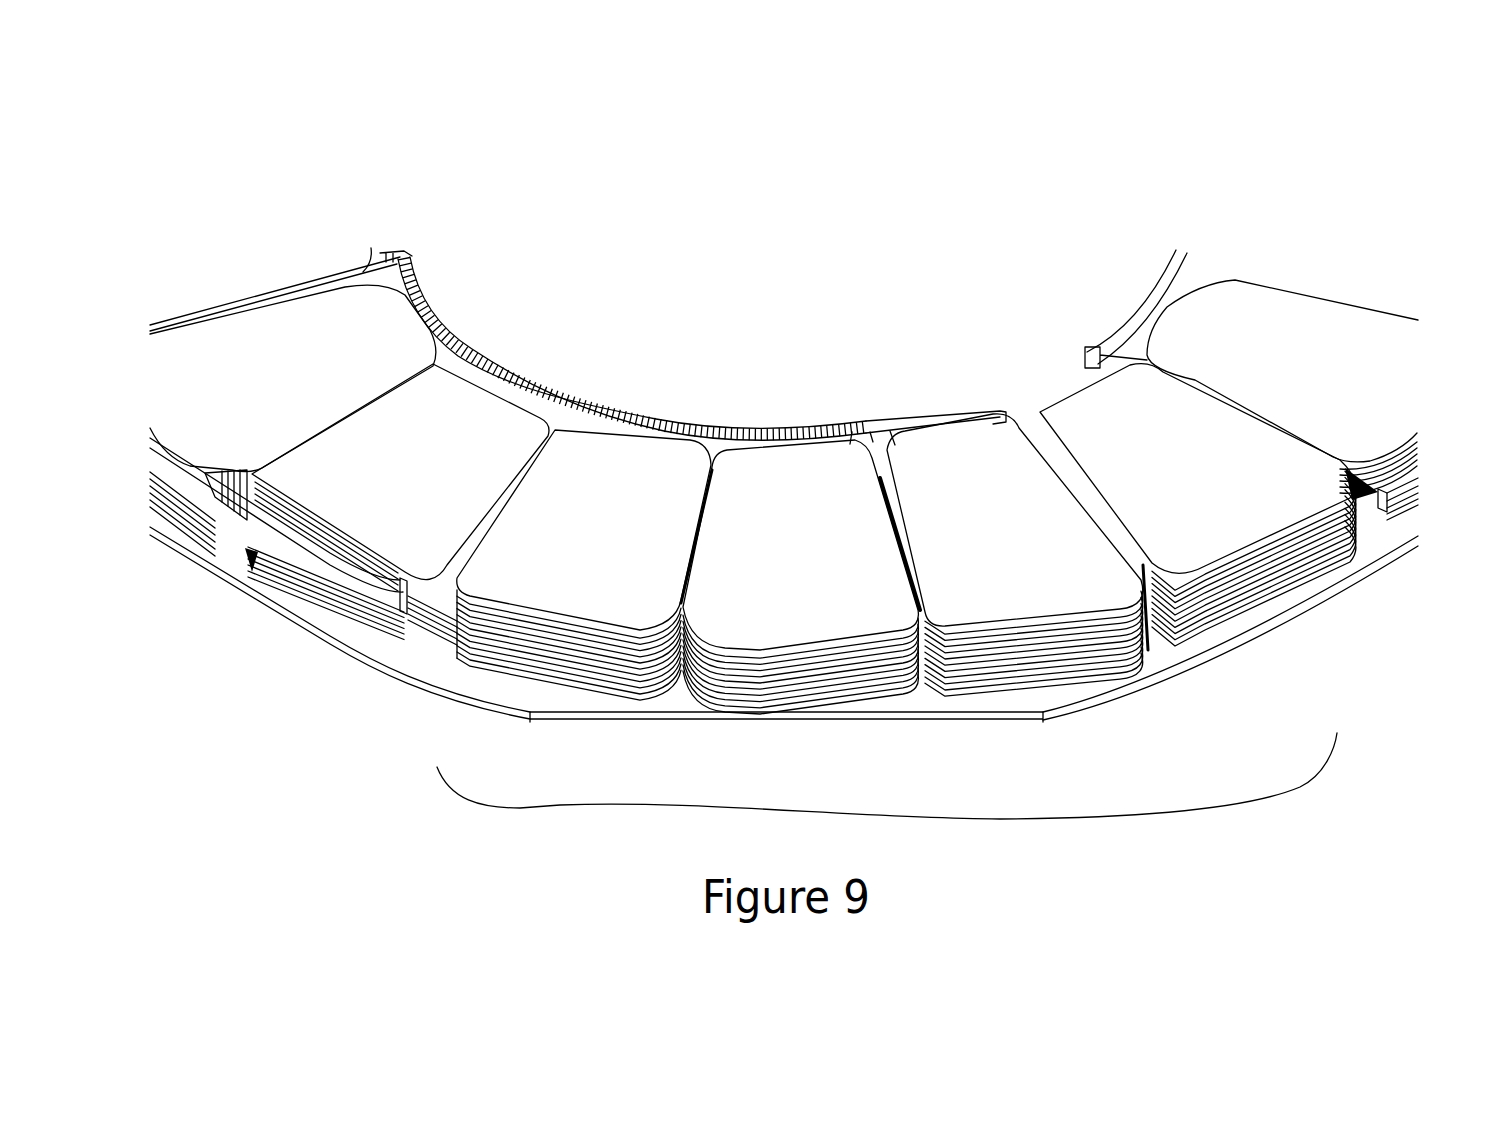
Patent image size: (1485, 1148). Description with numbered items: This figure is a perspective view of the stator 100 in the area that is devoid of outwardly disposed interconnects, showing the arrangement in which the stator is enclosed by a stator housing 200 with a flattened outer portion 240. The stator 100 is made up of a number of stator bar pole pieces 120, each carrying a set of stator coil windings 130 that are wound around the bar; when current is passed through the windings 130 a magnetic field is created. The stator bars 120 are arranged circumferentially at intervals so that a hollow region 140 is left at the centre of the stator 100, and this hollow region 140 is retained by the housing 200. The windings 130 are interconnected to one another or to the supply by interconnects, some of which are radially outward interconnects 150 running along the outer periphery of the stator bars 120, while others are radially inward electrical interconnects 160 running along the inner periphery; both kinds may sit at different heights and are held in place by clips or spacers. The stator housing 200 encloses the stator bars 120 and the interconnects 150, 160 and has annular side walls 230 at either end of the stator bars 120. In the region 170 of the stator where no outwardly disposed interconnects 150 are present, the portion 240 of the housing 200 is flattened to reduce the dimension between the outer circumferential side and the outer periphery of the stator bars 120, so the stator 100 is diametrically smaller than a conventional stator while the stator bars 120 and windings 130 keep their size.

The stator 100 is at (244, 186).
The stator bar pole piece 120 is at (645, 490).
The stator coil windings 130 is at (487, 658).
The hollow region 140 is at (592, 283).
The radially outward interconnects 150 is at (270, 552).
The radially inward electrical interconnects 160 is at (1142, 290).
The region devoid of outwardly disposed interconnects 170 is at (957, 820).
The stator housing 200 is at (273, 658).
The annular side walls 230 is at (1103, 682).
The flattened outer portion 240 is at (950, 717).